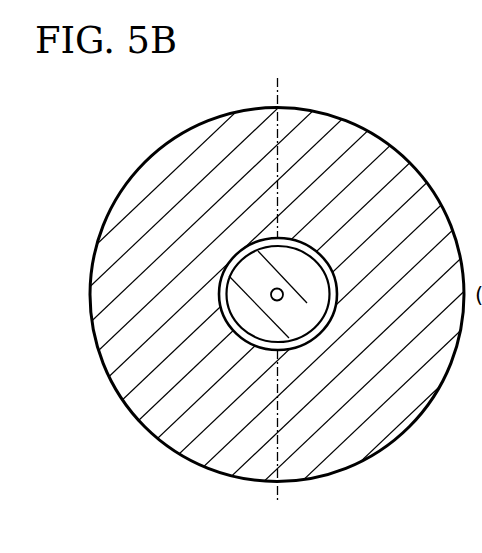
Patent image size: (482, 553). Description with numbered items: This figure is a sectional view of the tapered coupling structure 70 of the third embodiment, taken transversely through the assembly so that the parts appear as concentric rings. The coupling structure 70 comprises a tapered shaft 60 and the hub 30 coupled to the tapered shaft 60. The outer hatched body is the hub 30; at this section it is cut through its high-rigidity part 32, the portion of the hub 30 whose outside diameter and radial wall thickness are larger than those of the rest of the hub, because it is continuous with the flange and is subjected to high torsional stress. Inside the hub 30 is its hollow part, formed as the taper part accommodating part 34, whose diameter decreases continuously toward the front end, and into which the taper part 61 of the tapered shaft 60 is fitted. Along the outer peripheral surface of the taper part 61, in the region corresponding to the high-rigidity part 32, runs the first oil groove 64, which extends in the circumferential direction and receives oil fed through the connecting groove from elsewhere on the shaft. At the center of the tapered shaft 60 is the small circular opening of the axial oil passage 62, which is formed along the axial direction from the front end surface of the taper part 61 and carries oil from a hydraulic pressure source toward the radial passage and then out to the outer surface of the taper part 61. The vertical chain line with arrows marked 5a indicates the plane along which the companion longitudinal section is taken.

The coupling structure 70 is at (128, 148).
The hub 30 is at (246, 295).
The high-rigidity part 32 is at (118, 195).
The taper part accommodating part 34 is at (222, 296).
The first oil groove 64 is at (322, 258).
The axial oil passage 62 is at (291, 324).
The tapered shaft 60 is at (356, 391).
The taper part 61 is at (284, 296).
The section line 5a- 5a is at (277, 93).